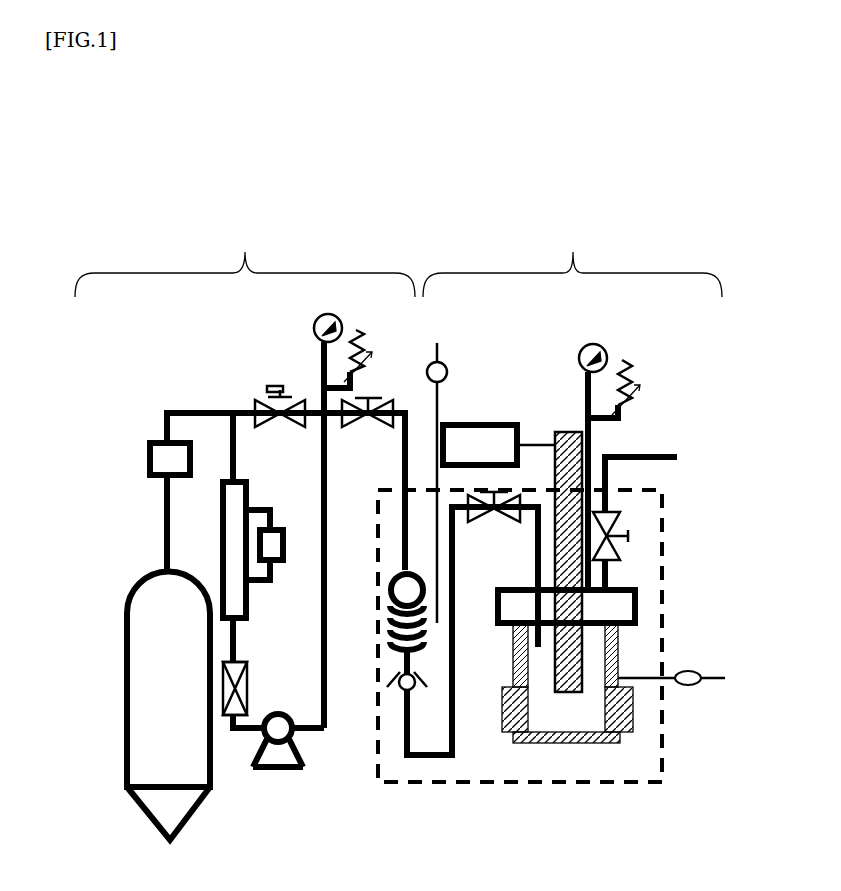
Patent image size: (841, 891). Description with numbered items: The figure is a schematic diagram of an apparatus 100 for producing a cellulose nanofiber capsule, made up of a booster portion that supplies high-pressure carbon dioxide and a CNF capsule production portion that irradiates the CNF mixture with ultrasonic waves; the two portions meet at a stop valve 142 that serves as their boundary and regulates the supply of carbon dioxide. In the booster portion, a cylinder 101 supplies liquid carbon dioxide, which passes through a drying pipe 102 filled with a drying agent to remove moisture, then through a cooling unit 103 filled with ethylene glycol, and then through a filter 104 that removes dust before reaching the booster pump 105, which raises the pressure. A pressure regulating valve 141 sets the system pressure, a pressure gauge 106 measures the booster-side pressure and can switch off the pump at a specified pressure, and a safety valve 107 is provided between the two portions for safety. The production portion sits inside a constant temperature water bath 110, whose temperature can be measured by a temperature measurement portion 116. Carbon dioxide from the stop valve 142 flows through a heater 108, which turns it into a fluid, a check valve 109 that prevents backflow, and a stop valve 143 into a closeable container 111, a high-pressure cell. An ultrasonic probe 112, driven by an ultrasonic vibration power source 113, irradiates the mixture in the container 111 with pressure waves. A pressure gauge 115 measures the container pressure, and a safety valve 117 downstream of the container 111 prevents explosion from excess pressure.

The apparatus 100 is at (419, 202).
The cylinder 101 is at (145, 742).
The drying pipe 102 is at (155, 457).
The cooling unit 103 is at (248, 500).
The filter 104 is at (247, 686).
The booster pump 105 is at (273, 770).
The pressure gauge 106 is at (314, 330).
The safety valve 107 is at (366, 348).
The heater 108 is at (370, 585).
The check valve 109 is at (400, 692).
The constant temperature water bath 110 is at (537, 785).
The closeable container 111 is at (605, 745).
The ultrasonic probe 112 is at (577, 665).
The ultrasonic vibration power source 113 is at (462, 435).
The pressure gauge 115 is at (583, 353).
The temperature measurement portion 116 is at (447, 370).
The safety valve 117 is at (640, 375).
The pressure regulating valve 141 is at (258, 410).
The stop valve 142 is at (360, 425).
The stop valve 143 is at (488, 522).